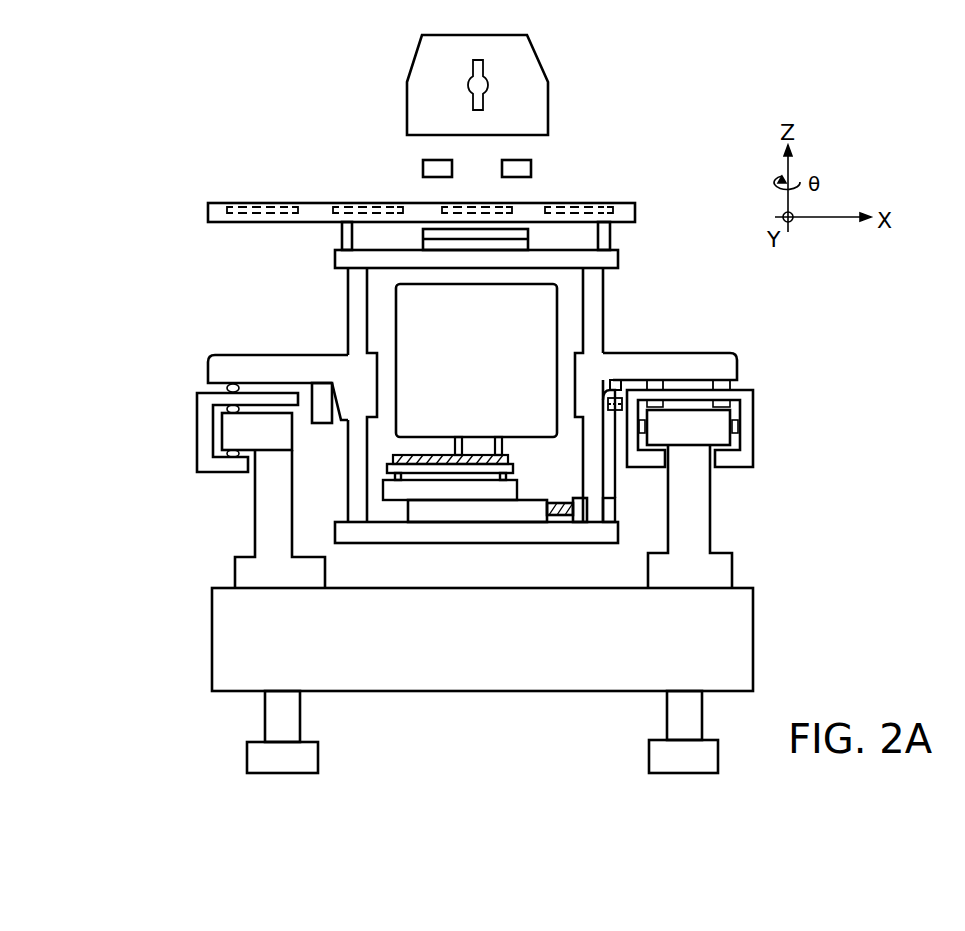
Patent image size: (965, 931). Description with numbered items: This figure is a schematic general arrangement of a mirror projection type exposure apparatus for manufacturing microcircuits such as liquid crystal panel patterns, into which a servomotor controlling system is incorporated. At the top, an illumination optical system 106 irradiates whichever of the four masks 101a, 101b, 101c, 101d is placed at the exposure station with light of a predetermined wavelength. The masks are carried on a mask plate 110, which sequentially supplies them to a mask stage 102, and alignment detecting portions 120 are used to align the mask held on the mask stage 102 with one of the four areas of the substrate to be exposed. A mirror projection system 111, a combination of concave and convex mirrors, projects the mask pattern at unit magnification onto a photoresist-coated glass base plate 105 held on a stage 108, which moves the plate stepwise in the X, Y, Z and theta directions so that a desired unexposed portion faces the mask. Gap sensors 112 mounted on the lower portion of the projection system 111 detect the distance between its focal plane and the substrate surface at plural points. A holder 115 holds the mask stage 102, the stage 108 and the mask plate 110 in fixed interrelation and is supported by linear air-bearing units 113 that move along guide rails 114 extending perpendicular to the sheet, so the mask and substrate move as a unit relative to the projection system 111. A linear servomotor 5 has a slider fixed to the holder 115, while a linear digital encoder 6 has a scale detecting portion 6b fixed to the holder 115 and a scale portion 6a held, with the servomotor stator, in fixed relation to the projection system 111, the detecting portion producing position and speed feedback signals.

The illumination optical system 106 is at (540, 85).
The alignment detecting portions 120 is at (507, 160).
The mask 101a is at (250, 207).
The mask 101b is at (350, 207).
The mask 101c is at (463, 205).
The mask 101d is at (580, 205).
The mask plate 110 is at (637, 212).
The mask stage 102 is at (528, 230).
The holder 115 is at (355, 315).
The mirror projection system 111 is at (538, 328).
The glass base plate 105 is at (435, 453).
The gap sensors 112 is at (507, 447).
The stage 108 is at (513, 513).
The servomotor 5 is at (320, 395).
The linear air-bearing units 113 is at (203, 435).
The guide rails 114 is at (238, 570).
The digital encoder 6 is at (611, 412).
The scale portion 6a is at (619, 400).
The scale detecting portion 6b is at (617, 382).